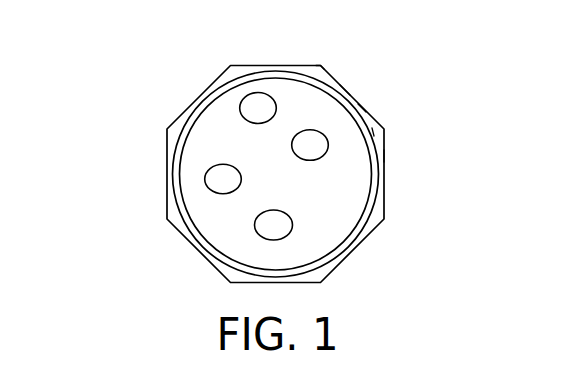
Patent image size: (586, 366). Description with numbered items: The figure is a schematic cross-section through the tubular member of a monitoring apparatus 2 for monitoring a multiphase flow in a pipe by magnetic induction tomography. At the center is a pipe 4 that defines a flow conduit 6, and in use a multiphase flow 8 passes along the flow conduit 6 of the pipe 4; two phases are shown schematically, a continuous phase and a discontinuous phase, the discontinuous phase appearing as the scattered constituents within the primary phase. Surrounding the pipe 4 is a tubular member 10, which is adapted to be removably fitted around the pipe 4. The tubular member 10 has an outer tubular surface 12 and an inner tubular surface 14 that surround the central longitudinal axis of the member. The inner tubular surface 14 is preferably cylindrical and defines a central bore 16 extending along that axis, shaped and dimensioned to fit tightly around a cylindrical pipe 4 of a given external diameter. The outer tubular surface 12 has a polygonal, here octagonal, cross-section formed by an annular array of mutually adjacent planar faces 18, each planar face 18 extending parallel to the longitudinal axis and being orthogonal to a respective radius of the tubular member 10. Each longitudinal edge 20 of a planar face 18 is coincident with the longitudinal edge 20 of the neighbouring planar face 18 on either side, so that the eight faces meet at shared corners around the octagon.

The monitoring apparatus 2 is at (86, 86).
The pipe 4 is at (186, 133).
The flow conduit 6 is at (207, 128).
The multiphase flow 8 is at (227, 115).
The tubular member 10 is at (307, 70).
The outer tubular surface 12 is at (345, 89).
The inner tubular surface 14 is at (363, 110).
The central bore 16 is at (373, 132).
The planar face 18 is at (386, 156).
The longitudinal edge 20 is at (321, 66).